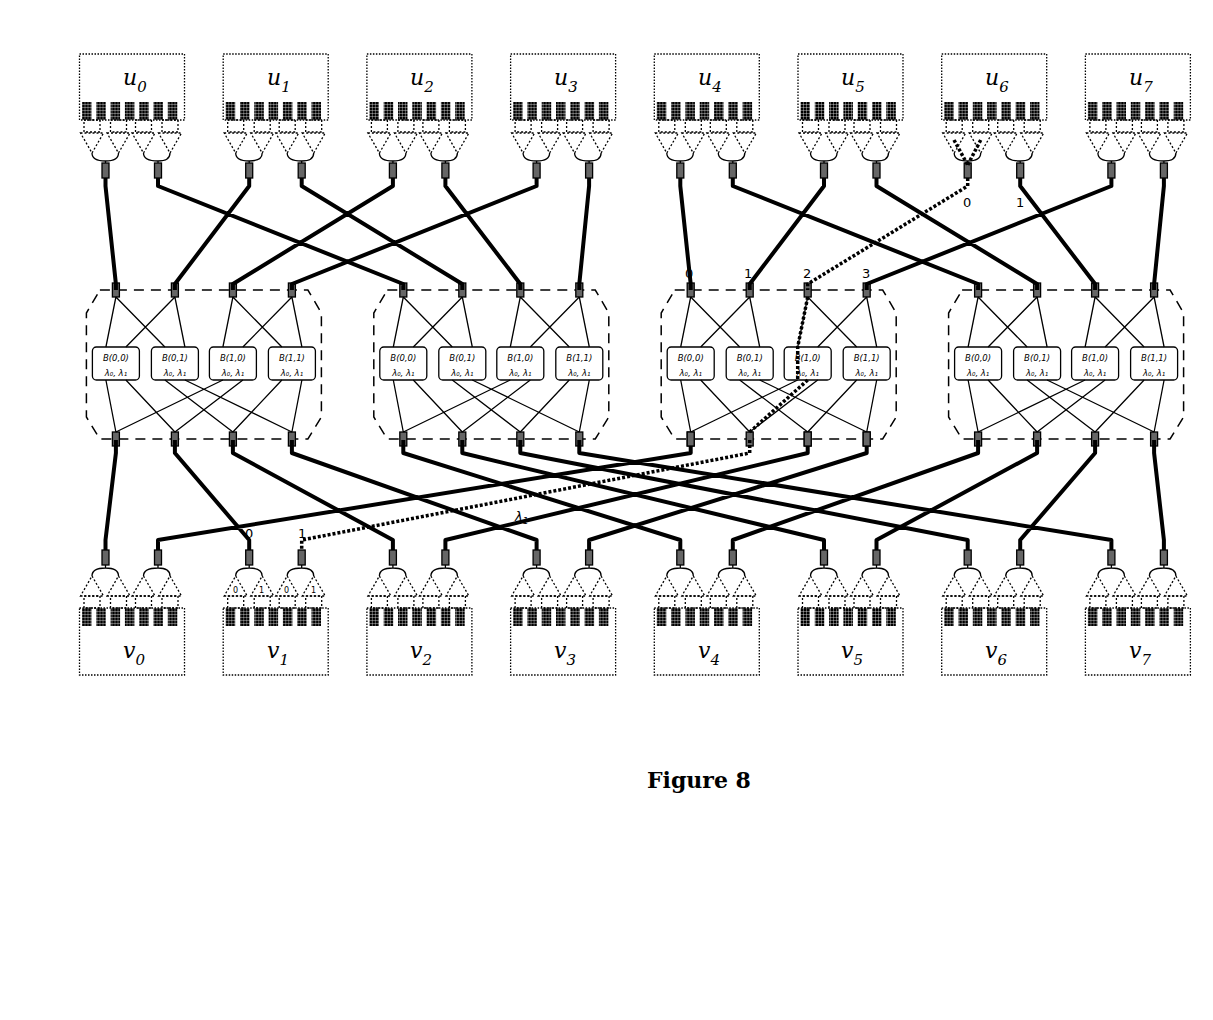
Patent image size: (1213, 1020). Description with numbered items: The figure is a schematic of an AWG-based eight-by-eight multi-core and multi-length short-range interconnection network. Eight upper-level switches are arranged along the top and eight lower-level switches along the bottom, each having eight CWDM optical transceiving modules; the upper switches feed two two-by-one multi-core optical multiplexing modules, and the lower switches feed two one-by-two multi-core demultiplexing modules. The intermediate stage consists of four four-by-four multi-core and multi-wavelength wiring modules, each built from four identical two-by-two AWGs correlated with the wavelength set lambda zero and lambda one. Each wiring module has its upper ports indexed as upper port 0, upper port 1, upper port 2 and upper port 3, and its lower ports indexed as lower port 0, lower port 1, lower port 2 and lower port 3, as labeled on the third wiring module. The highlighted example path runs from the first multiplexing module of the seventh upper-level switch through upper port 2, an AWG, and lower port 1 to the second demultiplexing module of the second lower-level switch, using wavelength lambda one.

The port 0 is at (689, 451).
The port 1 is at (527, 495).
The port 2 is at (807, 451).
The port 3 is at (866, 451).